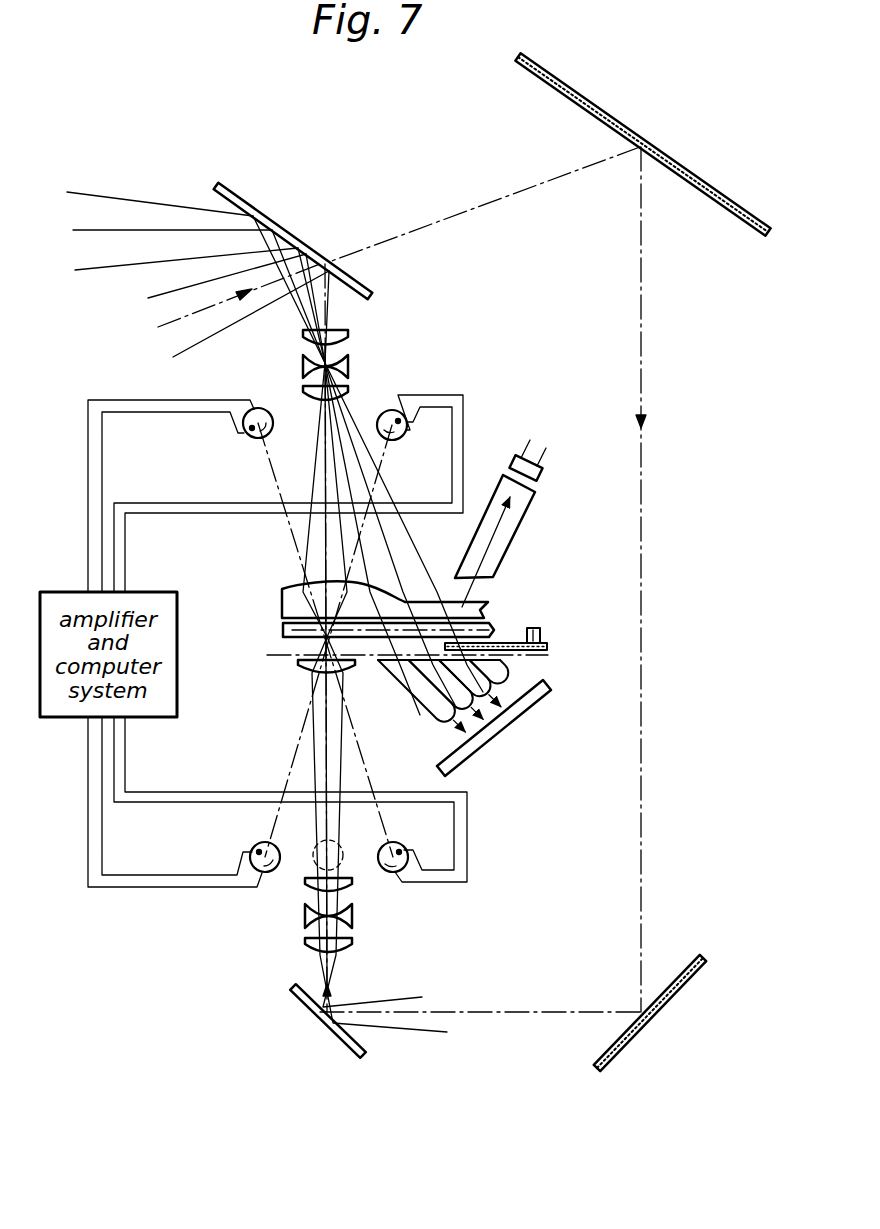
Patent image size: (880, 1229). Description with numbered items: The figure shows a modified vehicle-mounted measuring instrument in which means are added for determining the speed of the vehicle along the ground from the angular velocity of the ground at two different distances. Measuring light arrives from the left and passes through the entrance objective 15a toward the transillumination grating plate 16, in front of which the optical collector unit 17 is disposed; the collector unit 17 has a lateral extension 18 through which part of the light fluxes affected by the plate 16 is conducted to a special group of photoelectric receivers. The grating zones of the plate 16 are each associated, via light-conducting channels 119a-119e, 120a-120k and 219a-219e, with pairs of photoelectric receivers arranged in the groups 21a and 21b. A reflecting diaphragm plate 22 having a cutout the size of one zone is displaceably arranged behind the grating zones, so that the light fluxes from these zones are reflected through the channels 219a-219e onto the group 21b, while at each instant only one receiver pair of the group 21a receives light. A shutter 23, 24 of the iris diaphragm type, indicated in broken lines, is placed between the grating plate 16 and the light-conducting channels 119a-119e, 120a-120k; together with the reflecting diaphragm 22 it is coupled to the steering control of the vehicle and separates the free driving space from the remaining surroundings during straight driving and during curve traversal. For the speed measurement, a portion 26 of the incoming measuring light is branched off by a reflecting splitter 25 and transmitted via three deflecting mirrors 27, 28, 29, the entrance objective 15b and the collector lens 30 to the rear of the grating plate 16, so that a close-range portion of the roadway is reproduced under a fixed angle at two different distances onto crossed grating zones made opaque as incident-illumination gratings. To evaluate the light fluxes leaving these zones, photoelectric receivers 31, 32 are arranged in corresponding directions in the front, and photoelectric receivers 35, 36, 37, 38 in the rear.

The reflecting splitter 25 is at (246, 199).
The branched-off portion of measuring light 26 is at (440, 220).
The deflecting mirror 27 is at (733, 208).
The lens system 15a is at (296, 330).
The photoelectric receiver 35 is at (243, 436).
The photoelectric receiver 36 is at (403, 438).
The photoelectric receiver 37 is at (294, 640).
The photoelectric receiver 38 is at (294, 640).
The group of photoelectric receivers 21b is at (541, 474).
The light-conducting channel 219a is at (545, 526).
The light-conducting channel 219e is at (508, 530).
The optical collector unit 17 is at (282, 600).
The lateral extension 18 is at (487, 604).
The transillumination grating plate 16 is at (283, 630).
The reflecting diaphragm plate 22 is at (511, 642).
The light-conducting channel 119a is at (534, 663).
The light-conducting channel 119e is at (498, 658).
The shutter blade 23 is at (374, 676).
The shutter blade 24 is at (277, 657).
The collector lens 30 is at (310, 672).
The light-conducting channel 120a is at (435, 713).
The light-conducting channel 120k is at (420, 698).
The group of photoelectric receivers 21a is at (533, 700).
The photoelectric receiver 31 is at (252, 846).
The photoelectric receiver 32 is at (389, 873).
The entrance objective 15b is at (296, 880).
The deflecting mirror 29 is at (333, 1032).
The deflecting mirror 28 is at (677, 992).